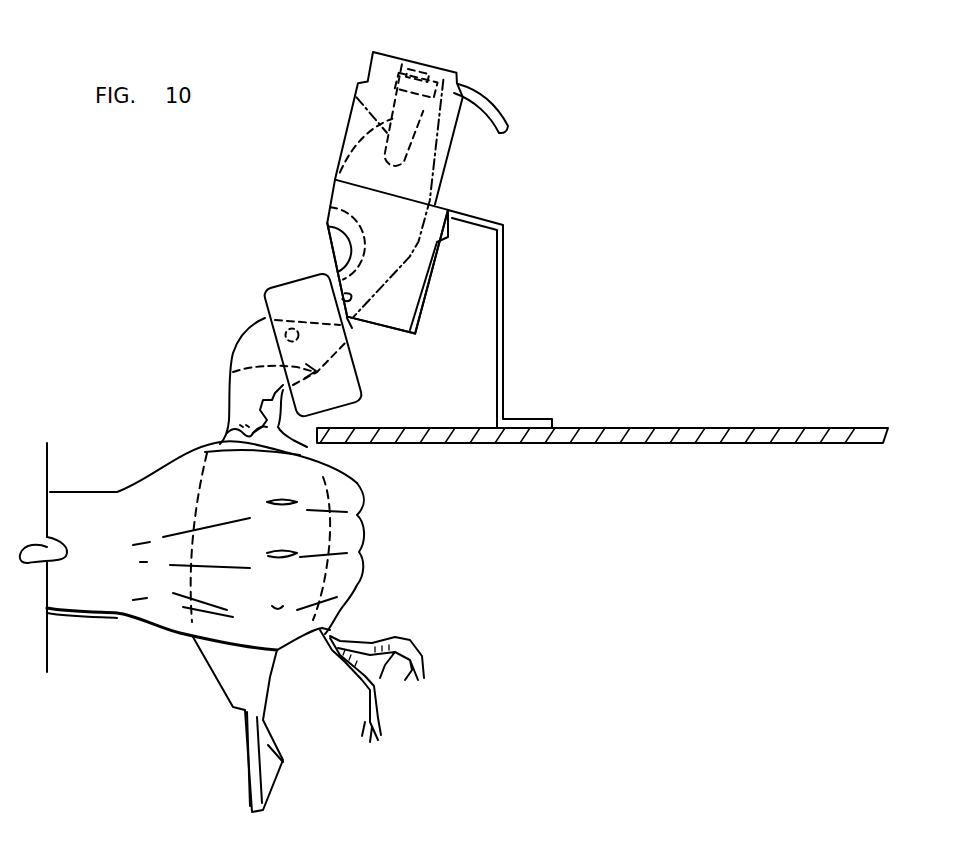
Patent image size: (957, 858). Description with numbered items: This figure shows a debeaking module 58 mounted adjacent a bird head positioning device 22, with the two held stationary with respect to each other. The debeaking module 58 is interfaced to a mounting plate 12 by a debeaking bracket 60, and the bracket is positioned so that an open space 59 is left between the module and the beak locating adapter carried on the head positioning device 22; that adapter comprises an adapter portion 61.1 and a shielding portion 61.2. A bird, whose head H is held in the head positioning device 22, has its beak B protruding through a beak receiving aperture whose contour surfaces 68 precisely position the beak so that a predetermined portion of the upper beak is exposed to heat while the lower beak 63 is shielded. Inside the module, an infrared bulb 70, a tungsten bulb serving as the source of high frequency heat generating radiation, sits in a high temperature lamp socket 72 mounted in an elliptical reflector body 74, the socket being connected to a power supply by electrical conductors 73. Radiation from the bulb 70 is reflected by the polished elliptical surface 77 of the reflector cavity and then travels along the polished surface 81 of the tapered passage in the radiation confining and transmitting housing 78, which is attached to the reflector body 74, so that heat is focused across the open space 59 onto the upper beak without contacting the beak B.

The mounting plate 12 is at (648, 428).
The bird head positioning device 22 is at (266, 312).
The debeaking module 58 is at (472, 157).
The open space 59 is at (350, 323).
The debeaking bracket 60 is at (505, 246).
The adapter portion 61.1 is at (343, 298).
The shielding portion 61.2 is at (330, 233).
The lower beak 63 is at (357, 328).
The contour surfaces 68 is at (233, 372).
The infrared bulb 70 is at (357, 95).
The lamp socket 72 is at (423, 55).
The electrical conductors 73 is at (503, 131).
The elliptical reflector body 74 is at (348, 128).
The polished elliptical surface 77 is at (330, 163).
The radiation confining and transmitting housing 78 is at (424, 290).
The polished surface 81 is at (330, 207).
The beak B is at (358, 333).
The head of bird H is at (240, 350).